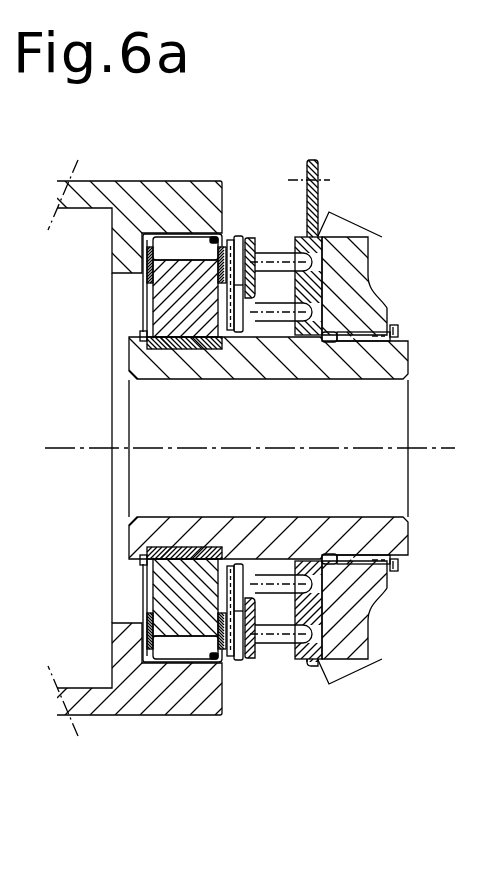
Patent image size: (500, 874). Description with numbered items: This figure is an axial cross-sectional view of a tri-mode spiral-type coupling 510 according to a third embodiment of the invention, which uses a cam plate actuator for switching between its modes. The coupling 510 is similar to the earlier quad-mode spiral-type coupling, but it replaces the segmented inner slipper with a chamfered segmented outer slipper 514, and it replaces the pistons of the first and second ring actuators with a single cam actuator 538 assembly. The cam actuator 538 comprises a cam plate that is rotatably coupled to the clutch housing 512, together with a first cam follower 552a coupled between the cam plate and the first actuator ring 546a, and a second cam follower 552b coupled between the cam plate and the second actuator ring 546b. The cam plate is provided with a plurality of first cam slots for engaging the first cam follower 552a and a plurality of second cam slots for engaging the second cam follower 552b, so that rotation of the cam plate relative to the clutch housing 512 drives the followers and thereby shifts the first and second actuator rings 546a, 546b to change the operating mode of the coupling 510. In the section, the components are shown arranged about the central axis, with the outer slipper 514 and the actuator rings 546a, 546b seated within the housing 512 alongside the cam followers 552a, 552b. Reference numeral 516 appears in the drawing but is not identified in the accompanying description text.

The tri-mode spiral-type coupling 510 is at (256, 474).
The clutch housing 512 is at (175, 312).
The chamfered segmented outer slipper 514 is at (183, 250).
The housing 516 is at (150, 203).
The cam actuator 538 is at (258, 542).
The first actuator ring 546a is at (232, 655).
The second actuator ring 546b is at (240, 238).
The first cam follower 552a is at (292, 633).
The second cam follower 552b is at (270, 265).